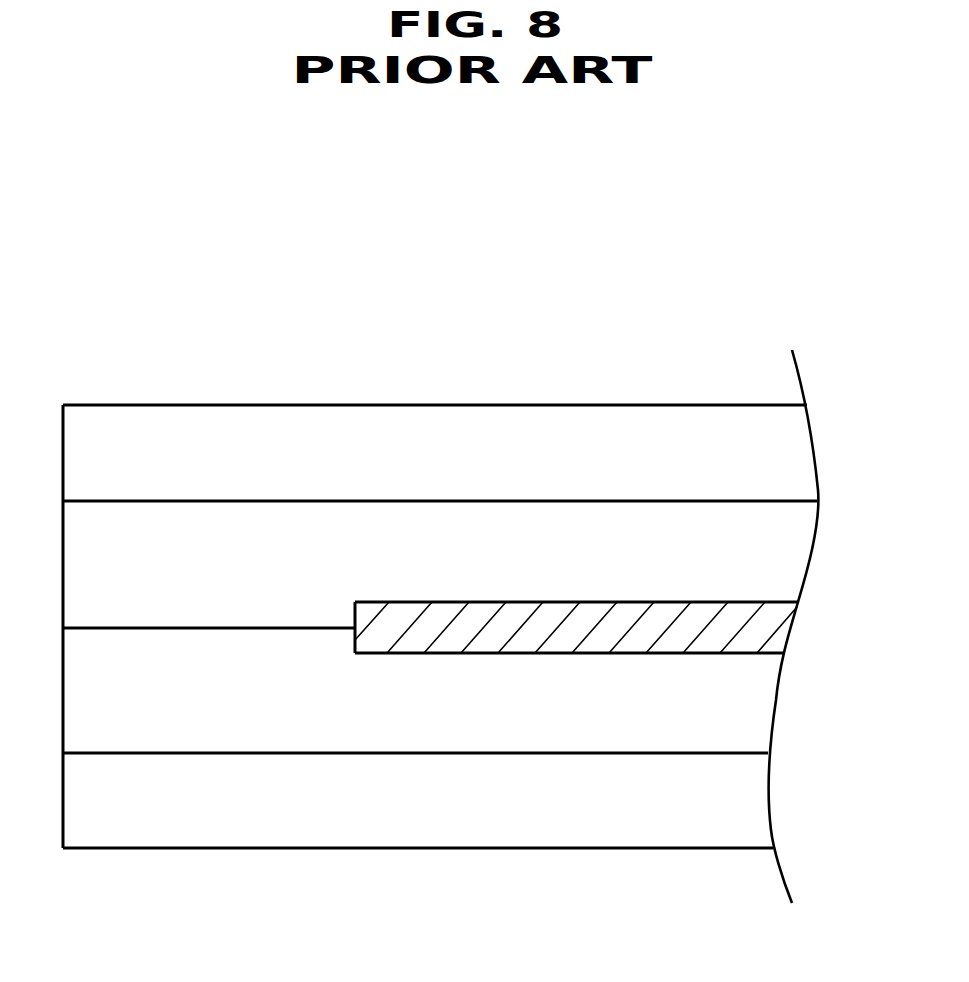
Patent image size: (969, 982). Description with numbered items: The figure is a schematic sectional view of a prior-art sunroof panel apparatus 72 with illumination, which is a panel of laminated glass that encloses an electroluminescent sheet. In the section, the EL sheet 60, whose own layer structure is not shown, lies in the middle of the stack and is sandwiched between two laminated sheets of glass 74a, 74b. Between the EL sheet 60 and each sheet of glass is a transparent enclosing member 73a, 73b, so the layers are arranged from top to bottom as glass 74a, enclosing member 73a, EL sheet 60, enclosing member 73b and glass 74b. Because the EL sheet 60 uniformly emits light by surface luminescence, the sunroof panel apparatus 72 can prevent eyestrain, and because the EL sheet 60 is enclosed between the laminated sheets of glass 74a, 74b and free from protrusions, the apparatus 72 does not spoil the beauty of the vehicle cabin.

The sunroof panel apparatus 72 is at (210, 373).
The transparent enclosing member 73a is at (417, 547).
The laminated sheet of glass 74a is at (536, 462).
The EL sheet 60 is at (697, 602).
The transparent enclosing member 73b is at (416, 710).
The laminated sheet of glass 74b is at (536, 796).